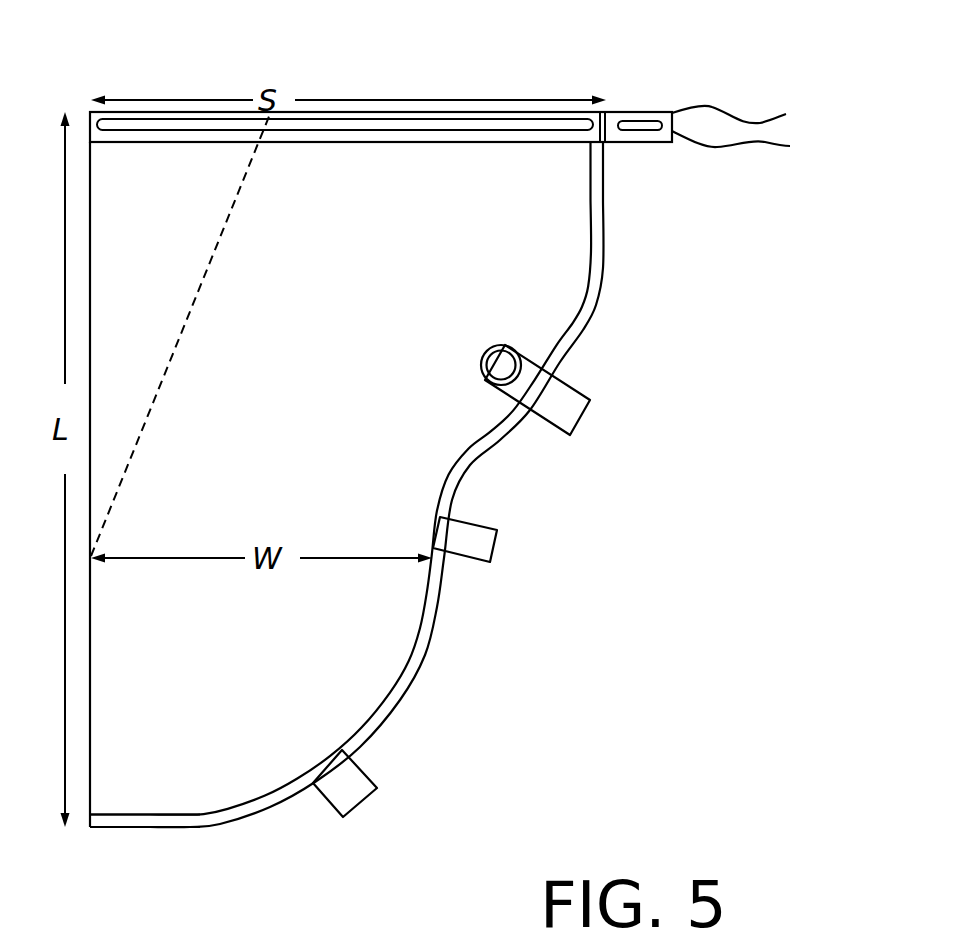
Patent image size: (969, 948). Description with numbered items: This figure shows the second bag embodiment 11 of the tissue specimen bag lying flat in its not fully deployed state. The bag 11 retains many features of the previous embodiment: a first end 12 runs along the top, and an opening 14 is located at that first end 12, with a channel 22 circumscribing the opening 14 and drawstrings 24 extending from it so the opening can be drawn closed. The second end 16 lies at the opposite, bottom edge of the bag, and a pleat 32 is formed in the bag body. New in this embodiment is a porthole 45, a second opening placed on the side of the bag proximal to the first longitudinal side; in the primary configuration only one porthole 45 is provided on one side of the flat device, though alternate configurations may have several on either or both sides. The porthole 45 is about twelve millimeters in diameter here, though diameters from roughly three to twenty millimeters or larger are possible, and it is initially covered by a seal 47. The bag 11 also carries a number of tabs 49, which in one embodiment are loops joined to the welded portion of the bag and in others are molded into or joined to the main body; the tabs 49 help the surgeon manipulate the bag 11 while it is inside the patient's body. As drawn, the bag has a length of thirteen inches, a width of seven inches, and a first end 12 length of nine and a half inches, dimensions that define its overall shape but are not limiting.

The second bag embodiment 11 is at (558, 578).
The first end 12 is at (431, 100).
The opening 14 is at (403, 110).
The second end 16 is at (145, 843).
The channel 22 is at (520, 133).
The drawstrings 24 is at (712, 108).
The pleat 32 is at (197, 287).
The porthole 45 is at (484, 382).
The seal 47 is at (503, 363).
The tabs 49 is at (466, 538).